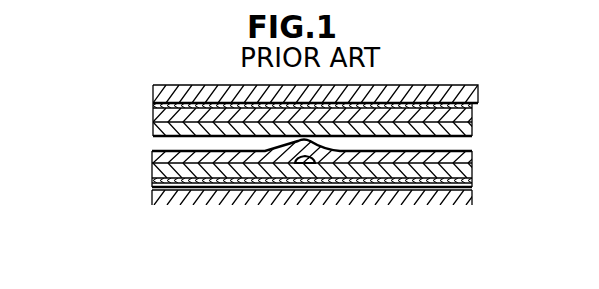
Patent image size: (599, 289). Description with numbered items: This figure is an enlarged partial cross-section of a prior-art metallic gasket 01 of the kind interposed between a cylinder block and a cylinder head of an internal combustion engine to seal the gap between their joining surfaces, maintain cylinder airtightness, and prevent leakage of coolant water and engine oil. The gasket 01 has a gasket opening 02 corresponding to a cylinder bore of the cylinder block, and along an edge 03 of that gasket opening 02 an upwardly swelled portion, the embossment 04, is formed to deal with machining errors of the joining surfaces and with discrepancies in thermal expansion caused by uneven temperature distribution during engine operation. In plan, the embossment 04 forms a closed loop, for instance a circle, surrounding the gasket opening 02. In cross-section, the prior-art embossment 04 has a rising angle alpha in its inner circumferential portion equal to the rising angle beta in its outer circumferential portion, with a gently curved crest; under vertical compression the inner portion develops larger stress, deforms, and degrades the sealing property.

The gasket 01 is at (472, 159).
The gasket opening 02 is at (80, 146).
The edge 03 is at (156, 87).
The embossment 04 is at (305, 164).